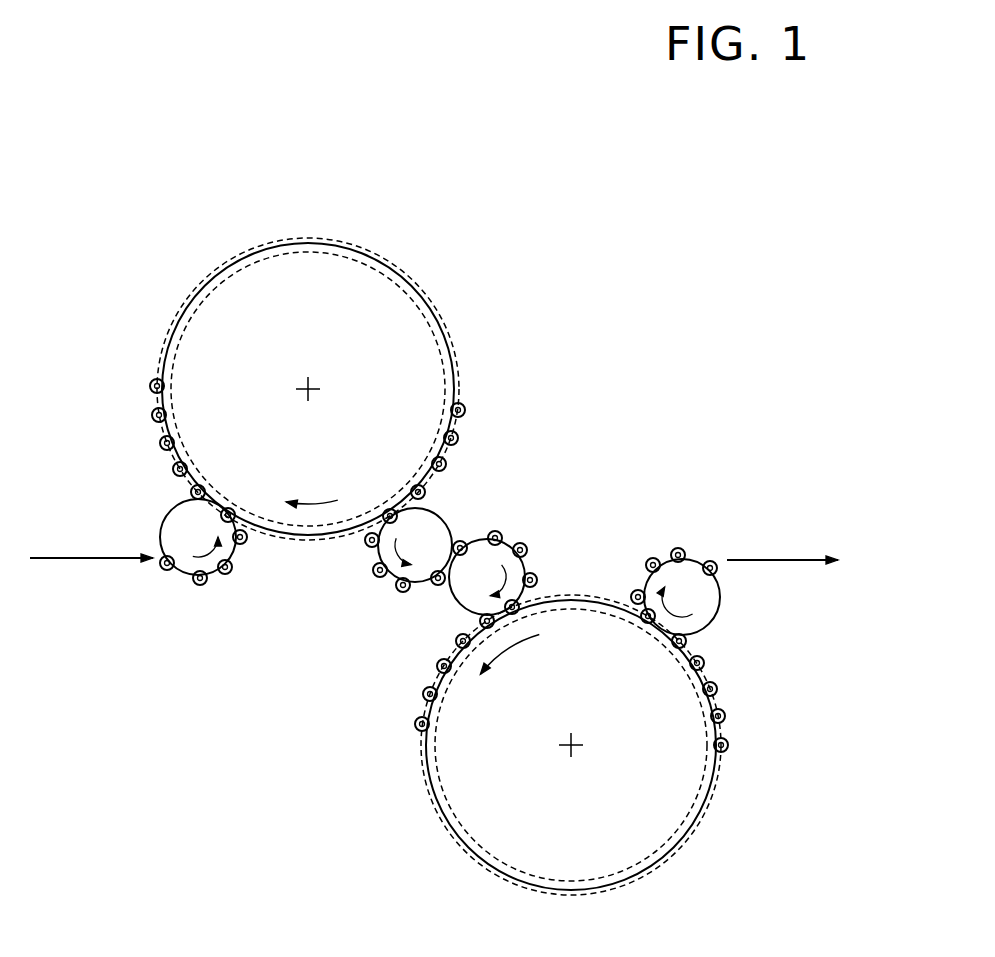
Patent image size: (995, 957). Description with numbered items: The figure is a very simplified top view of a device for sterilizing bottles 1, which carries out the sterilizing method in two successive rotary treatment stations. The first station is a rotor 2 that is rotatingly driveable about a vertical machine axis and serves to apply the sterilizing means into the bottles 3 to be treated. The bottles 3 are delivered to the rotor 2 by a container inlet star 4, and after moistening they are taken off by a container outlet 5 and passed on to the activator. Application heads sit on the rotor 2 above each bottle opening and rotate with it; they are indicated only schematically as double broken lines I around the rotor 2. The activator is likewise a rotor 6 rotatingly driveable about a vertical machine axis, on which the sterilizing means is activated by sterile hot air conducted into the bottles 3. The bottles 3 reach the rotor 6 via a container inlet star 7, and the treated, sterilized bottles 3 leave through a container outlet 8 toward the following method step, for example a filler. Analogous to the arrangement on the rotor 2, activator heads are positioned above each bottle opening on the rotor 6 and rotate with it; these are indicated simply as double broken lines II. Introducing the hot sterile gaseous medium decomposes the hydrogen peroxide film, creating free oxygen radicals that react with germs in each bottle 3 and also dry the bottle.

The device for sterilizing bottles 1 is at (152, 265).
The double broken lines indicating application heads I is at (362, 250).
The double broken lines indicating activator heads II is at (697, 828).
The rotor 2 is at (422, 382).
The bottles 3 is at (163, 447).
The container inlet star 4 is at (208, 560).
The container outlet 5 is at (432, 533).
The rotor 6 is at (690, 782).
The container inlet star 7 is at (515, 575).
The container outlet 8 is at (675, 577).